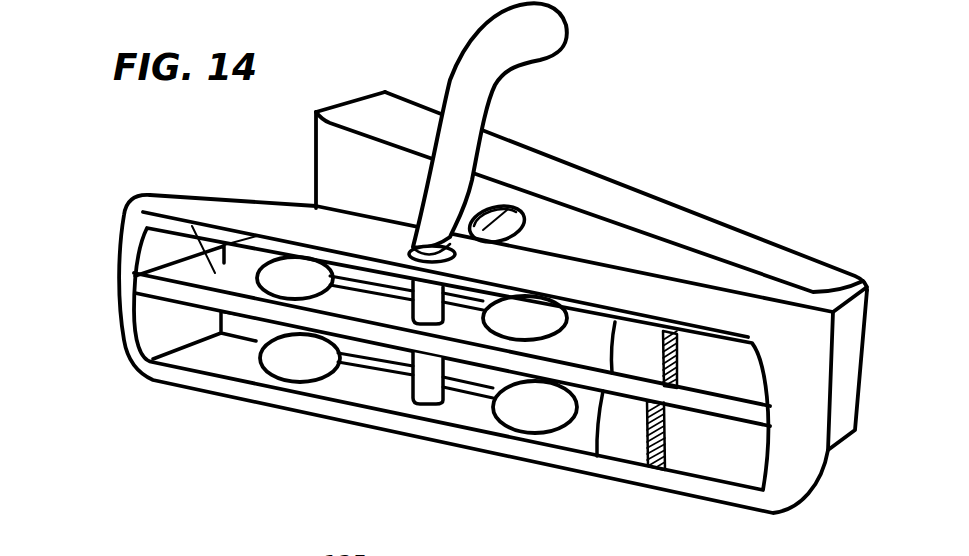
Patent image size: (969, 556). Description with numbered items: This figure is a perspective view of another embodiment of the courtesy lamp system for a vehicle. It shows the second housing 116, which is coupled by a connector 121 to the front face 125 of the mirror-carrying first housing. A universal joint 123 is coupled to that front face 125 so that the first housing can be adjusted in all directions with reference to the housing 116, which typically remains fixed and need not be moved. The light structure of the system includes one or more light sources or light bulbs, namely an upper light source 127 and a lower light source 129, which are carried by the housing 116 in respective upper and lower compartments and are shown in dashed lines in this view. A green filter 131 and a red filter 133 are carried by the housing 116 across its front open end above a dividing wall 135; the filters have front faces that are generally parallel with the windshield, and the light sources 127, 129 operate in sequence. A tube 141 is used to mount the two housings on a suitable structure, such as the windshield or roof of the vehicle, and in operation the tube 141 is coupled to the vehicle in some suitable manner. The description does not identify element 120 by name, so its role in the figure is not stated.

The second housing 116 is at (380, 428).
The handle 120 is at (450, 117).
The connector 121 is at (528, 190).
The universal joint 123 is at (530, 192).
The front face 125 is at (667, 267).
The light source 127 is at (293, 273).
The light source 129 is at (287, 360).
The green filter 131 is at (628, 372).
The red filter 133 is at (622, 428).
The dividing wall 135 is at (222, 247).
The tube 141 is at (440, 200).